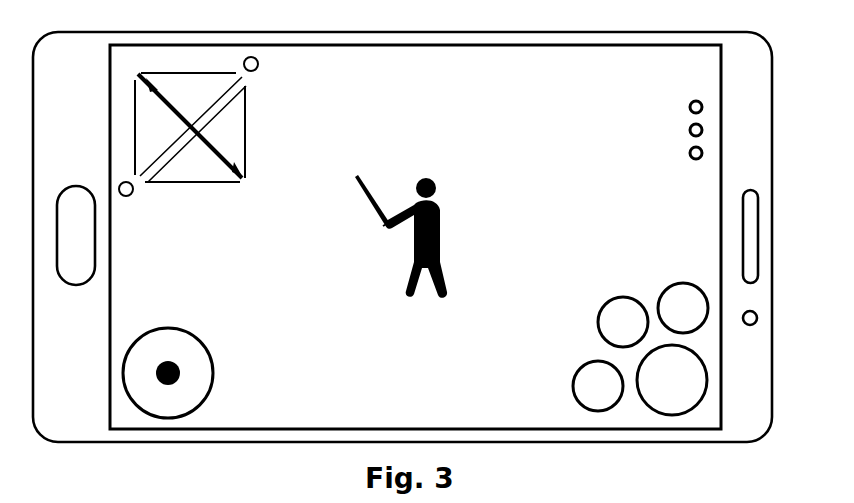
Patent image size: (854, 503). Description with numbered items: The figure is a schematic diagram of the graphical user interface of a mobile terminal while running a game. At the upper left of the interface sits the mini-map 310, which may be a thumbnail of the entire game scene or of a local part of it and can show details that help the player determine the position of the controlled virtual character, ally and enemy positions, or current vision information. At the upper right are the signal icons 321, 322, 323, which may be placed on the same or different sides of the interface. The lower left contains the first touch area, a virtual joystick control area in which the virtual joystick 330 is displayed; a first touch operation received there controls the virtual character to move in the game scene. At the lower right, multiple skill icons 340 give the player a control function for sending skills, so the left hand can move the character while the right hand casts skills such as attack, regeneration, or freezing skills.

The mini-map 310 is at (277, 142).
The signal icon 321 is at (689, 104).
The signal icon 322 is at (689, 127).
The signal icon 323 is at (689, 150).
The virtual joystick 330 is at (215, 377).
The skill icons 340 is at (597, 332).